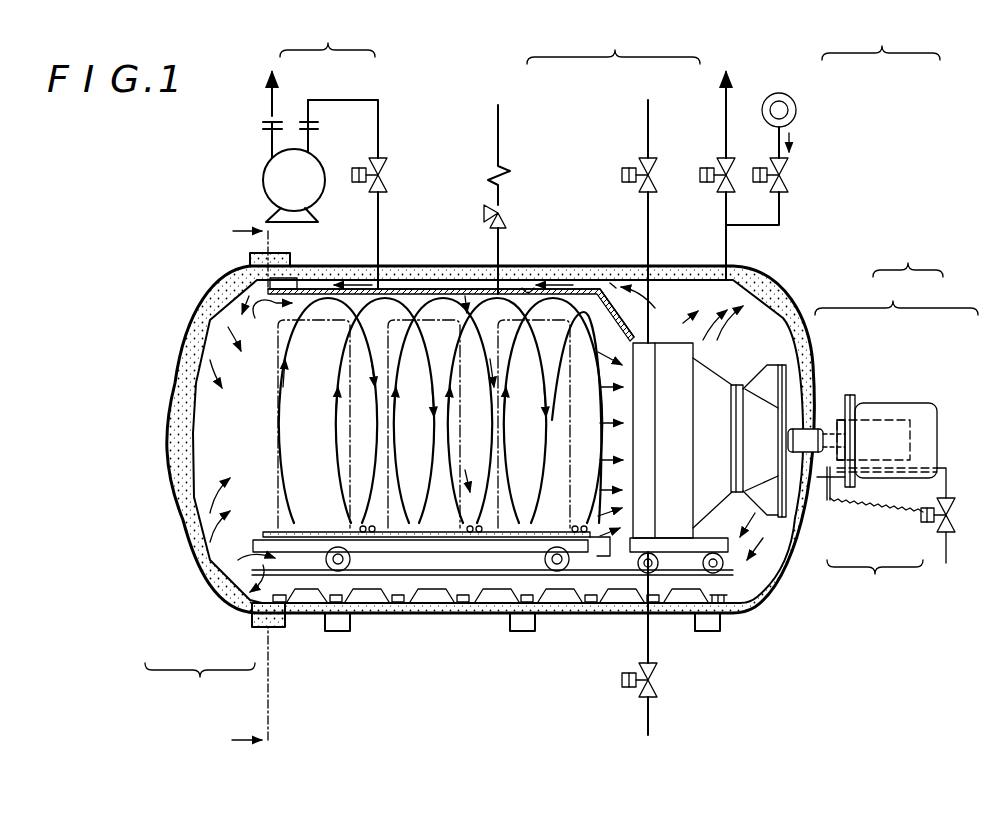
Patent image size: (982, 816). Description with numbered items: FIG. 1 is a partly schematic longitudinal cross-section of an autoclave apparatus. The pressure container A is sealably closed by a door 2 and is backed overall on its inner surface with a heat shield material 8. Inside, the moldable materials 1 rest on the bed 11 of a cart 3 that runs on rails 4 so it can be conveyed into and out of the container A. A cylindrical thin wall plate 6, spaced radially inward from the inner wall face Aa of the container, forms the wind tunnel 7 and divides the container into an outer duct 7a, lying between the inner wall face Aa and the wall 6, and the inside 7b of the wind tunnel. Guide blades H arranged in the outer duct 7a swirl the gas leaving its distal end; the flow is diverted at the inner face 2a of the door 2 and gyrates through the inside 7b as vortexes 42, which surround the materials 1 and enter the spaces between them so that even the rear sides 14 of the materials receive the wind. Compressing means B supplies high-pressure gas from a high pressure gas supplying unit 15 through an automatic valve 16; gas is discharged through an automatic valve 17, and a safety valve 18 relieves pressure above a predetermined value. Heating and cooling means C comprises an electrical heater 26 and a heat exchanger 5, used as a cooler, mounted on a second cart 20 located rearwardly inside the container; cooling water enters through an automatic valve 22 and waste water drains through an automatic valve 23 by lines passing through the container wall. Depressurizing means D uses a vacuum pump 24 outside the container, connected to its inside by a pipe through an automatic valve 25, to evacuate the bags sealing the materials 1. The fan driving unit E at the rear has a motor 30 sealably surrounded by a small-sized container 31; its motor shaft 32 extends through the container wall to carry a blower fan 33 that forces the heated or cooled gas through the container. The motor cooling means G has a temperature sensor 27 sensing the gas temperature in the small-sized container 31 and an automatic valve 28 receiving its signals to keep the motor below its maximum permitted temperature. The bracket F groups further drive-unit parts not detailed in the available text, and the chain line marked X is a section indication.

The moldable materials 1 is at (278, 403).
The door 2 is at (207, 598).
The inner face of the door 2a is at (200, 481).
The cart 3 is at (413, 549).
The rails 4 is at (283, 576).
The heat exchanger 5 is at (675, 330).
The wall of the wind tunnel 6 is at (424, 288).
The wind tunnel 7 is at (488, 230).
The outer duct 7a is at (387, 291).
The inside of the wind tunnel 7b is at (463, 288).
The heat shield material 8 is at (178, 456).
The bed of the cart 11 is at (392, 540).
The rear sides of the materials 14 is at (473, 573).
The high pressure gas supplying unit 15 is at (797, 108).
The automatic valve 16 is at (790, 165).
The automatic valve 17 is at (737, 165).
The safety valve 18 is at (486, 210).
The second cart 20 is at (688, 545).
The automatic valve 22 is at (629, 168).
The automatic valve 23 is at (632, 340).
The vacuum pump 24 is at (295, 158).
The automatic valve 25 is at (357, 168).
The electrical heater 26 is at (613, 287).
The temperature sensor 27 is at (828, 500).
The automatic valve 28 is at (929, 519).
The motor 30 is at (928, 447).
The small-sized container 31 is at (900, 408).
The motor shaft 32 is at (856, 432).
The blower fan 33 is at (810, 438).
The vortexes 42 is at (331, 434).
The pressure container A is at (200, 688).
The compressing means B is at (881, 39).
The heating and cooling means C is at (613, 42).
The depressurizing means D is at (327, 37).
The fan driving unit E is at (908, 258).
The fan F is at (896, 295).
The motor cooling means G is at (881, 442).
The guide blades H is at (257, 282).
The inner wall face of the pressure container Aa is at (530, 284).
The section line X- X is at (238, 487).